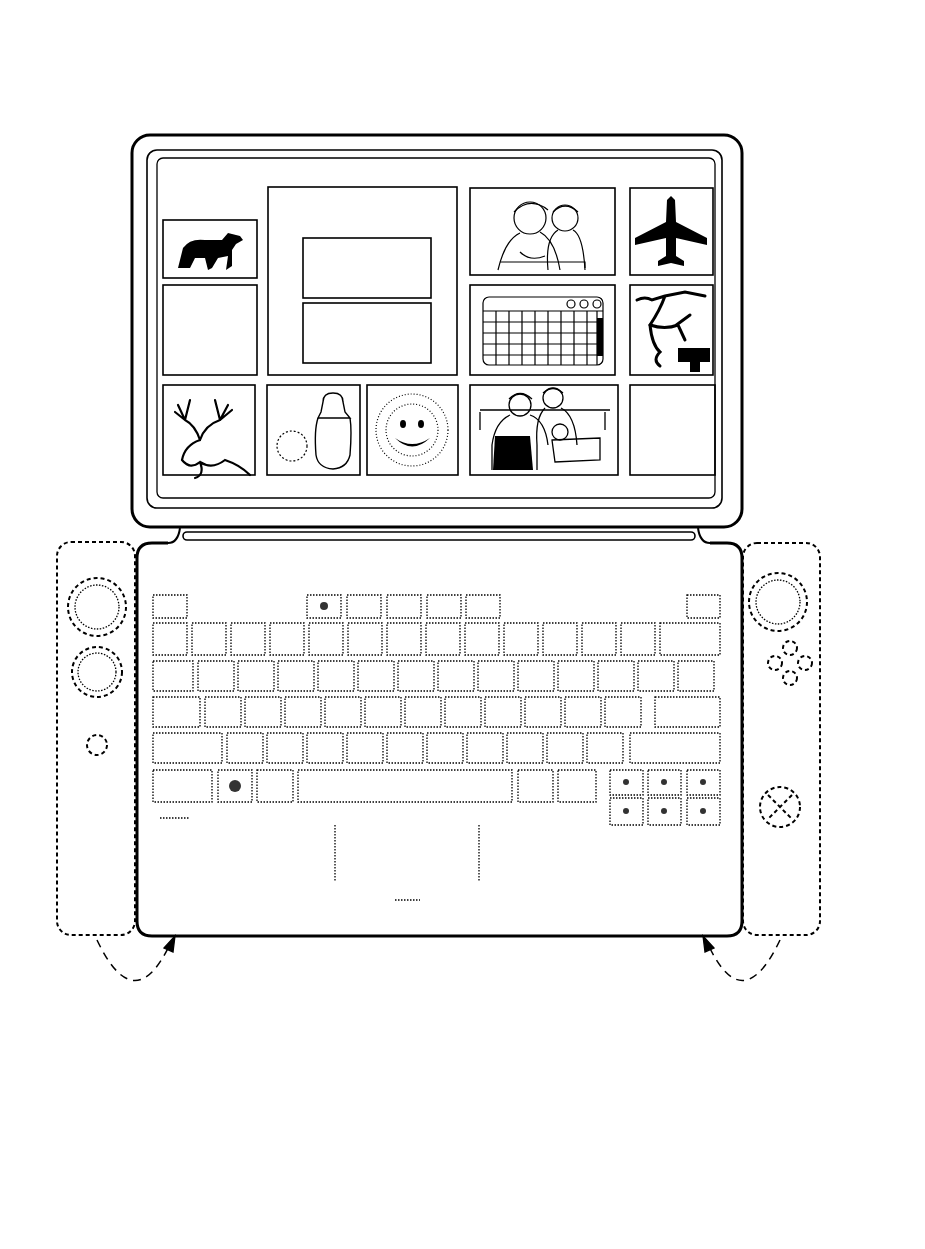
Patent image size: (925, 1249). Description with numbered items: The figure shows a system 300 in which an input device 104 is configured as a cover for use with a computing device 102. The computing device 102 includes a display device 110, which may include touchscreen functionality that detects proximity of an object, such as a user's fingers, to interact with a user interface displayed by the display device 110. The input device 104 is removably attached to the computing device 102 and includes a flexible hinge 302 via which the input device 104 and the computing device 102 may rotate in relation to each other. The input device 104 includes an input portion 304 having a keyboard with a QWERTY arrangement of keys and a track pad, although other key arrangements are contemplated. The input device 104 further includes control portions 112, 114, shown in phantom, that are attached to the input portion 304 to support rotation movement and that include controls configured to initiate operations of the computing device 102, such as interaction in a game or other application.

The system 300 is at (127, 62).
The computing device 102 is at (444, 134).
The display device 110 is at (155, 330).
The flexible hinge 302 is at (128, 531).
The input device 104 is at (478, 937).
The input portion 304 is at (216, 908).
The control portion 112 is at (96, 937).
The control portion 114 is at (780, 937).